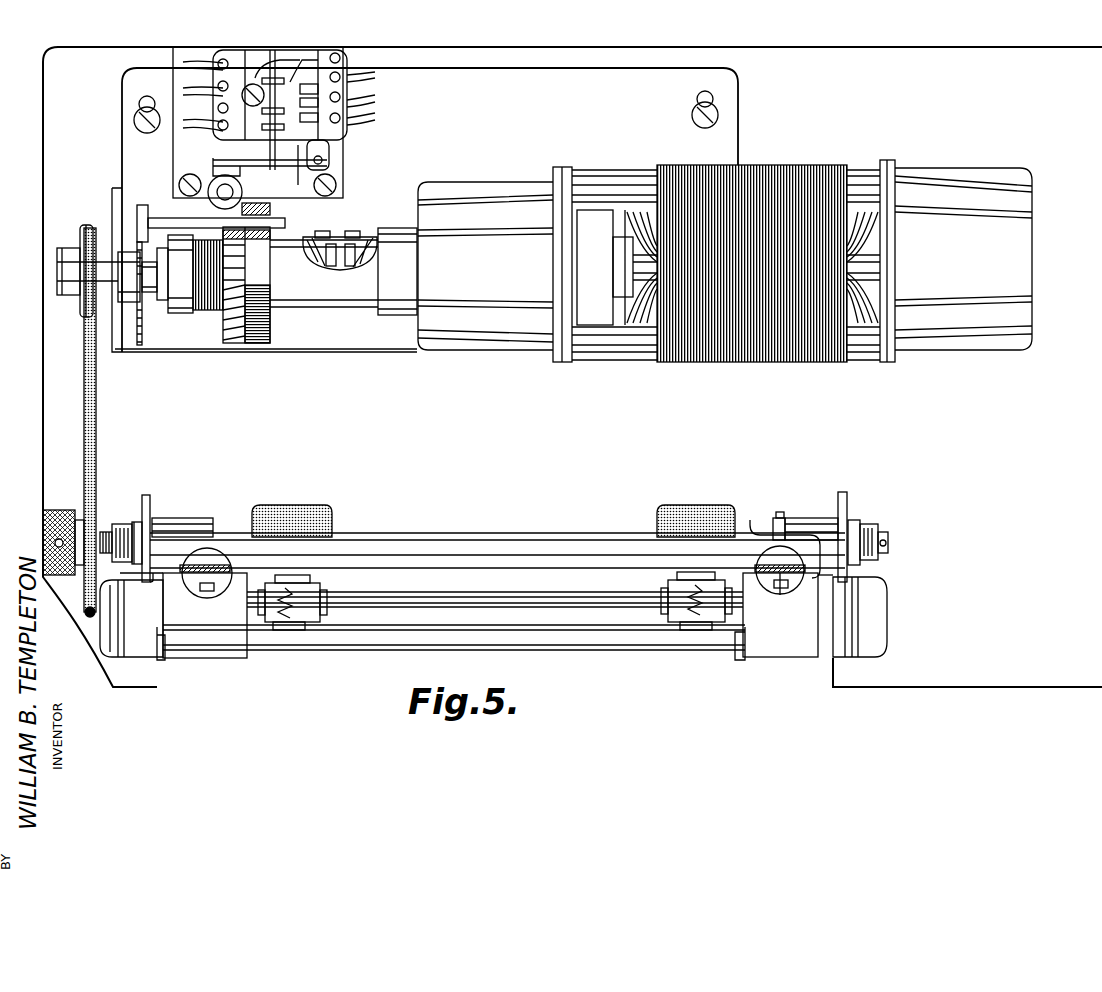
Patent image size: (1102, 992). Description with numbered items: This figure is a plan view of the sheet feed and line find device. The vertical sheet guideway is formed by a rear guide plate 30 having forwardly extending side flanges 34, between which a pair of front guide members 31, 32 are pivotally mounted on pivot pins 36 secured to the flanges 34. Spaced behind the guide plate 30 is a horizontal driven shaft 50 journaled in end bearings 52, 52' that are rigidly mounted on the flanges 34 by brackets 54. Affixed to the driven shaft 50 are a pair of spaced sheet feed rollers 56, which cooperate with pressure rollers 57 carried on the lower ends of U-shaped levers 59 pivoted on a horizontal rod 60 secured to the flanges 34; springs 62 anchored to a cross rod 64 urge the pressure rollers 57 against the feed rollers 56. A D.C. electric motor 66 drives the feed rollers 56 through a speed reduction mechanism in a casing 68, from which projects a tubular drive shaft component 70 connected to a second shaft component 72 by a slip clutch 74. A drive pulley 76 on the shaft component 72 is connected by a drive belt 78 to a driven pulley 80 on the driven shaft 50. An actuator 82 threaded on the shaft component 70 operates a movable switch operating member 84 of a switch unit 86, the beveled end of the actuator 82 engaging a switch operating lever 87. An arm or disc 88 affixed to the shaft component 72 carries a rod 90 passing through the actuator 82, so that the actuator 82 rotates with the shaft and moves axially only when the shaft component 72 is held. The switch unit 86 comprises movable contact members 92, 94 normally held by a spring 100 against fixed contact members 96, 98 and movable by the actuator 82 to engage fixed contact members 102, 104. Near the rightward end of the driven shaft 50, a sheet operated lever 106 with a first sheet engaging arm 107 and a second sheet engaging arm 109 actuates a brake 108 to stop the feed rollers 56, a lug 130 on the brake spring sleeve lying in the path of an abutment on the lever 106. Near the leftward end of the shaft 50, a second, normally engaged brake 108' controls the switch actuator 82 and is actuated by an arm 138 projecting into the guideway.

The rear guide plate 30 is at (213, 560).
The guide member 31 is at (220, 578).
The guide member 32 is at (790, 592).
The side flanges 34 is at (170, 572).
The pivot pins 36 is at (160, 660).
The driven shaft 50 is at (112, 522).
The end bearing 52 is at (898, 557).
The end bearing 52' is at (164, 514).
The brackets 54 is at (155, 505).
The sheet feed rollers 56 is at (315, 510).
The pressure rollers 57 is at (312, 620).
The U-shaped levers 59 is at (318, 580).
The horizontal rod 60 is at (475, 608).
The springs 62 is at (300, 632).
The cross rod 64 is at (362, 652).
The D.C. electric motor 66 is at (790, 158).
The casing 68 is at (482, 353).
The drive shaft component 70 is at (208, 312).
The shaft component 72 is at (150, 298).
The slip clutch 74 is at (325, 272).
The drive pulley 76 is at (84, 228).
The drive belt 78 is at (84, 388).
The driven pulley 80 is at (78, 478).
The actuator 82 is at (268, 330).
The switch operating member 84 is at (272, 98).
The switch unit 86 is at (348, 138).
The switch operating lever 87 is at (265, 158).
The arm or disc 88 is at (140, 345).
The rod 90 is at (162, 215).
The movable contact member 92 is at (299, 172).
The movable contact member 94 is at (270, 76).
The fixed contact member 96 is at (318, 118).
The fixed contact member 98 is at (318, 82).
The spring 100 is at (262, 51).
The fixed contact member 102 is at (318, 100).
The fixed contact member 104 is at (298, 64).
The lever 106 is at (780, 512).
The first sheet engaging arm 107 is at (782, 595).
The brake 108 is at (821, 496).
The second sheet operated brake 108' is at (194, 504).
The second sheet engaging arm 109 is at (780, 588).
The lug 130 is at (755, 520).
The arm 138 is at (207, 592).